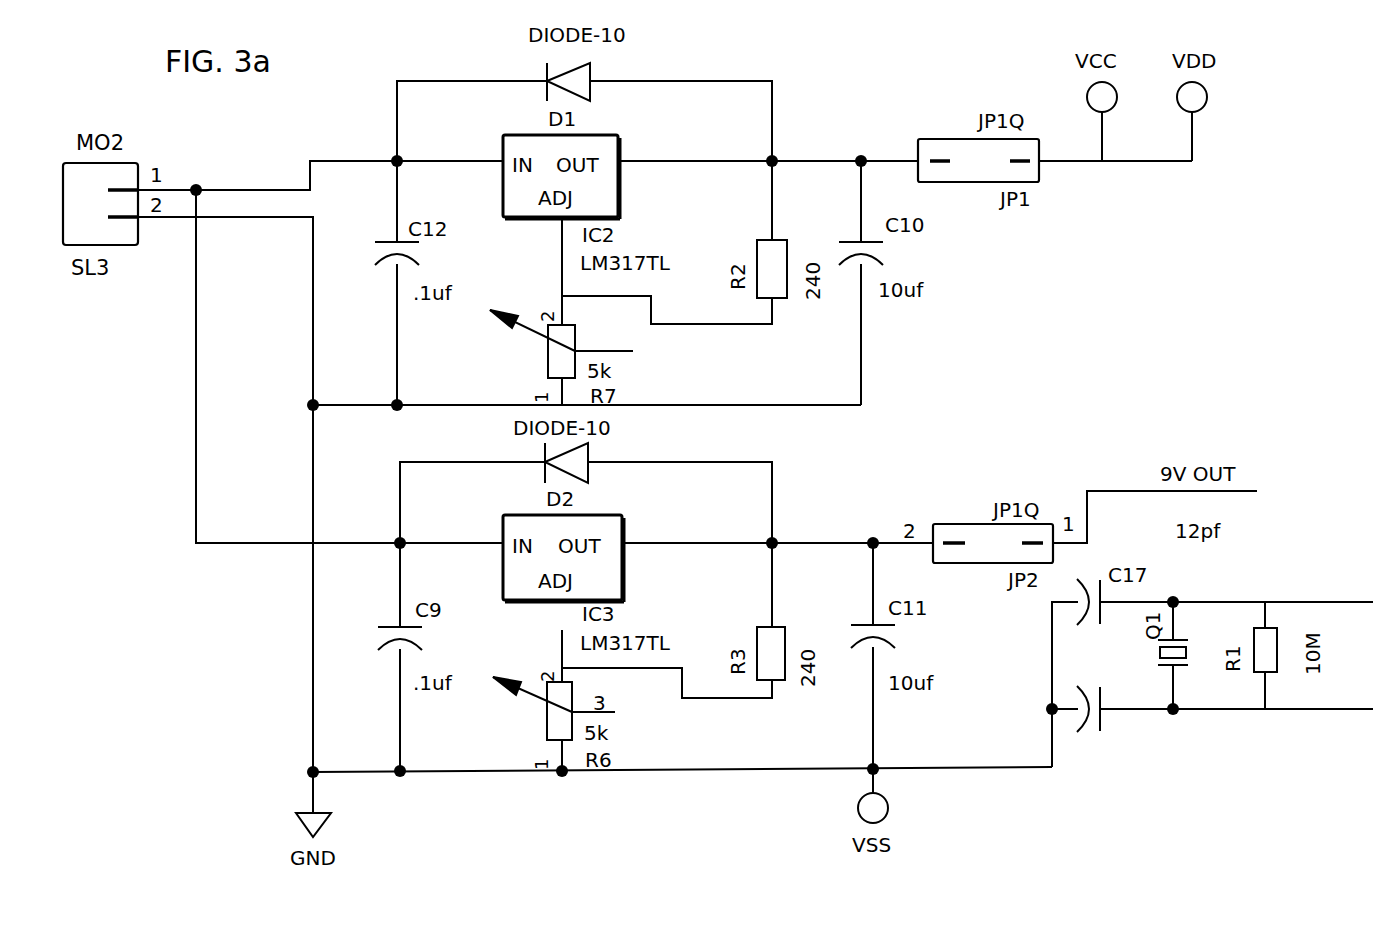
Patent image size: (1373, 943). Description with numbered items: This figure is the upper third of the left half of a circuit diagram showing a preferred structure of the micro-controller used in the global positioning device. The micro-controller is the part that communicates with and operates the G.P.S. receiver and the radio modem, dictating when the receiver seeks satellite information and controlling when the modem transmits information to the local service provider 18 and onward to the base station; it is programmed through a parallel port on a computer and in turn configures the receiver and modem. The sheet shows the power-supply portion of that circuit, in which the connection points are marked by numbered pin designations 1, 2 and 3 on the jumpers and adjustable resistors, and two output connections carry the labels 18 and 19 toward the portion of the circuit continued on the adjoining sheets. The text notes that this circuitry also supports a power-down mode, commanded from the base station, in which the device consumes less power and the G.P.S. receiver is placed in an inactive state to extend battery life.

The local service provider 18 is at (1236, 696).
The oscillator line 19 is at (1236, 588).
The jumper JP1 pin 1 is at (1036, 150).
The jumper JP1 pin 2 is at (921, 151).
The potentiometer R7 wiper pin 3 is at (604, 340).